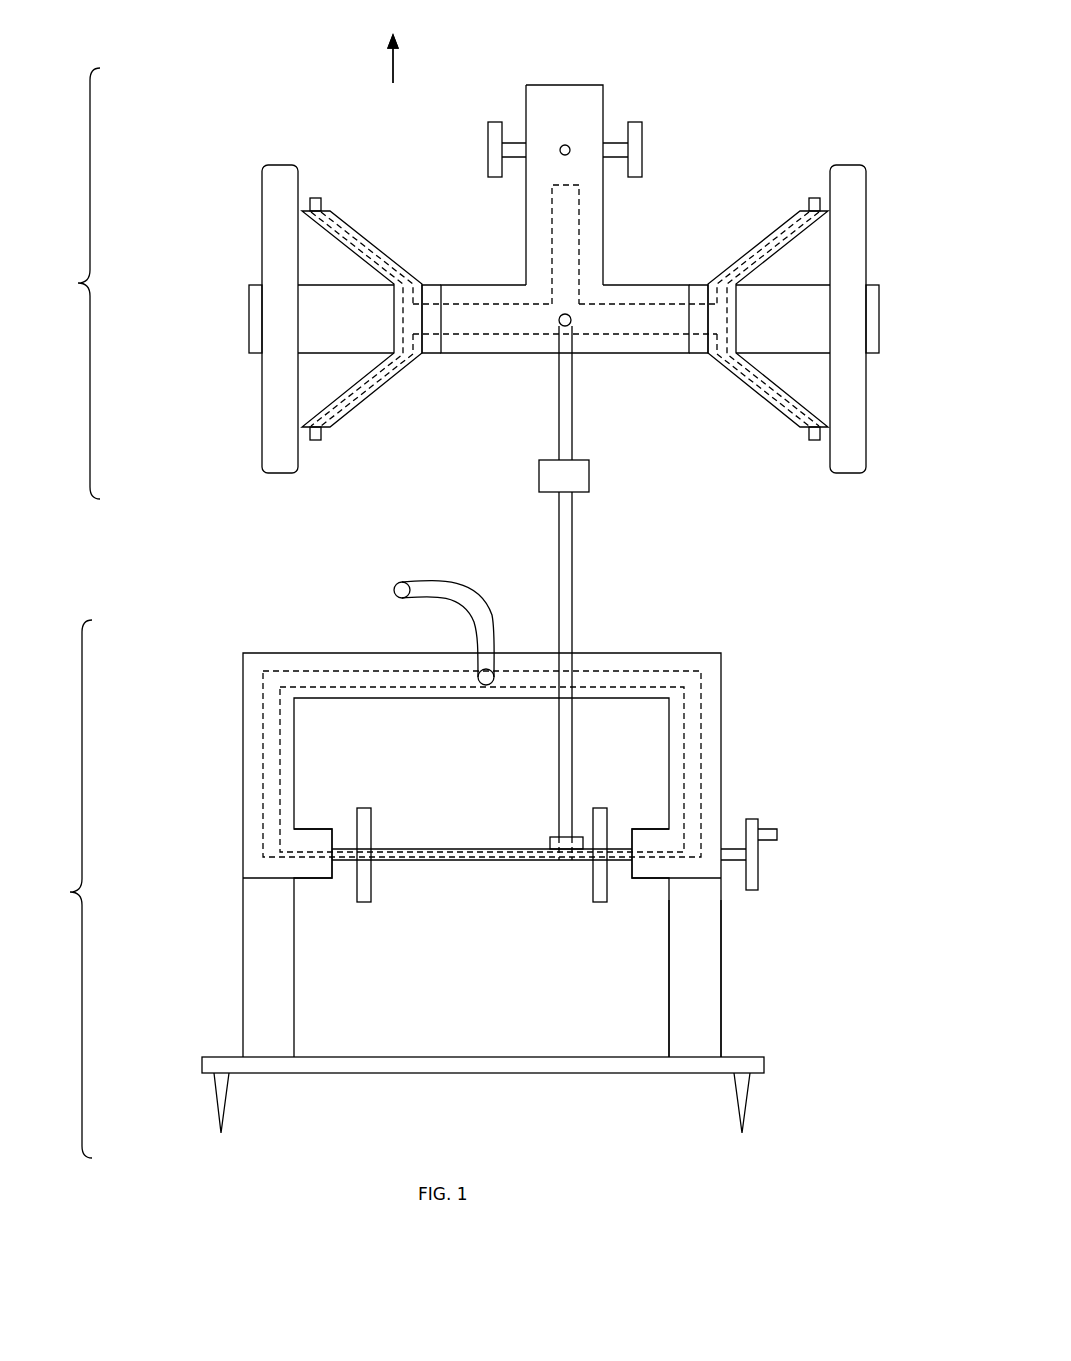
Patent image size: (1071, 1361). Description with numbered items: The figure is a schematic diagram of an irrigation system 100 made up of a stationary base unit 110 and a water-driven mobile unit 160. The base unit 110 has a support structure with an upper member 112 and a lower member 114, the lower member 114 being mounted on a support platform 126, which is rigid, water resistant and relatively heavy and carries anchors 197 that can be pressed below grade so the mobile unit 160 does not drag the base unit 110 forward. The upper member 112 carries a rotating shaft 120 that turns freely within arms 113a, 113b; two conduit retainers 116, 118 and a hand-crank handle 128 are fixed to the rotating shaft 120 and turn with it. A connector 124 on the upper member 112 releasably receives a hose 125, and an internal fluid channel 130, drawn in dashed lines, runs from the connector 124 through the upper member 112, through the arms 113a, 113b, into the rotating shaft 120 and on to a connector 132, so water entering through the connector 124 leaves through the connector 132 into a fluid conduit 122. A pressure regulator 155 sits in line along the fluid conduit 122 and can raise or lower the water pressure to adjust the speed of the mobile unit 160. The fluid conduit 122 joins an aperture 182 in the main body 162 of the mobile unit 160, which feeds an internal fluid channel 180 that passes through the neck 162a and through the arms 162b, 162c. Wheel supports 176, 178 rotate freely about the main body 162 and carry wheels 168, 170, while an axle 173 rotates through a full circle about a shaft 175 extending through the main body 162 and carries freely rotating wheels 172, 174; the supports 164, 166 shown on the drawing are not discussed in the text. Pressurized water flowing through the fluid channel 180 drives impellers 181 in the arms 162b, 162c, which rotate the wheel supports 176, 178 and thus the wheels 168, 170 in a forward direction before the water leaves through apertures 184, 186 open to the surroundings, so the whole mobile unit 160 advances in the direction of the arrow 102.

The irrigation system 100 is at (745, 79).
The arrow 102 is at (394, 72).
The base unit 110 is at (420, 825).
The upper member 112 is at (722, 685).
The arm 113a is at (307, 873).
The arm 113b is at (657, 873).
The lower member 114 is at (722, 953).
The conduit retainer 116 is at (371, 886).
The conduit retainer 118 is at (593, 881).
The rotating shaft 120 is at (420, 862).
The fluid conduit 122 is at (566, 570).
The connector 124 is at (485, 685).
The hose 125 is at (447, 590).
The support platform 126 is at (503, 1065).
The handle 128 is at (758, 872).
The internal fluid channel 130 is at (648, 678).
The connector 132 is at (550, 840).
The pressure regulator 155 is at (580, 472).
The mobile unit 160 is at (477, 275).
The main body 162 is at (558, 95).
The neck 162a is at (525, 197).
The arm 162b is at (505, 347).
The arm 162c is at (618, 348).
The left arm 164 is at (358, 242).
The right arm 166 is at (772, 242).
The wheel 168 is at (275, 196).
The wheel 170 is at (850, 206).
The wheel 172 is at (495, 137).
The axle 173 is at (514, 147).
The wheel 174 is at (634, 132).
The shaft 175 is at (569, 146).
The wheel support 176 is at (398, 264).
The wheel support 178 is at (736, 263).
The internal fluid channel 180 is at (563, 227).
The impeller 181 is at (431, 348).
The aperture 182 is at (560, 317).
The aperture 184 is at (316, 198).
The aperture 186 is at (815, 198).
The anchor 197 is at (225, 1085).